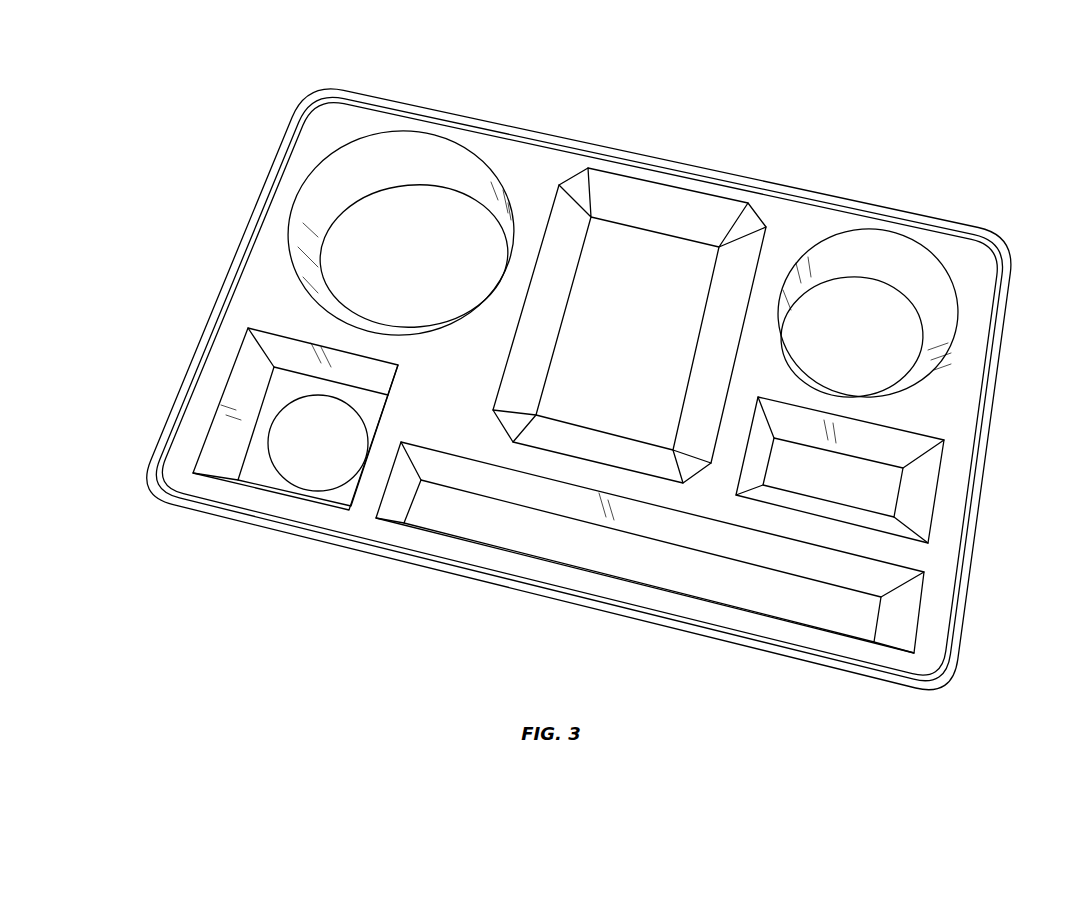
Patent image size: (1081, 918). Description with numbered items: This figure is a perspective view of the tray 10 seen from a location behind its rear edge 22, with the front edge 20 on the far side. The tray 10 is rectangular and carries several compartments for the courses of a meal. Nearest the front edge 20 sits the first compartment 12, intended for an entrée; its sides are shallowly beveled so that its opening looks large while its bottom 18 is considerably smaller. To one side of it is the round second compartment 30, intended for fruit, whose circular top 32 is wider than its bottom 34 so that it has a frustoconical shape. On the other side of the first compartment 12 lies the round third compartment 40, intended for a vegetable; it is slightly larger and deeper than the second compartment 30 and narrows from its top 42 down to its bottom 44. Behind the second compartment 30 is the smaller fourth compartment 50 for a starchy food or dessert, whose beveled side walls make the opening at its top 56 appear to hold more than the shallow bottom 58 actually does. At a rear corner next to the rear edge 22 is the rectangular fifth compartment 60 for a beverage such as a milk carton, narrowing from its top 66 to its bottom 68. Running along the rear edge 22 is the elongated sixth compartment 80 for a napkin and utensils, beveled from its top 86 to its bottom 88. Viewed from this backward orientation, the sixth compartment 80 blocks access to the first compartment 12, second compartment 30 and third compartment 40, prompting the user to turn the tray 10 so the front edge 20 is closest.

The tray 10 is at (579, 373).
The first compartment 12 is at (629, 291).
The bottom 18 is at (668, 226).
The front edge 20 is at (732, 170).
The rear edge 22 is at (640, 621).
The second compartment 30 is at (918, 274).
The top 32 is at (835, 230).
The bottom 34 is at (897, 296).
The third compartment 40 is at (343, 217).
The top 42 is at (350, 140).
The bottom 44 is at (355, 205).
The fourth compartment 50 is at (892, 470).
The top 56 is at (943, 458).
The bottom 58 is at (902, 489).
The fifth compartment 60 is at (246, 444).
The top 66 is at (202, 436).
The bottom 68 is at (237, 466).
The sixth compartment 80 is at (650, 580).
The top 86 is at (702, 601).
The bottom 88 is at (781, 575).